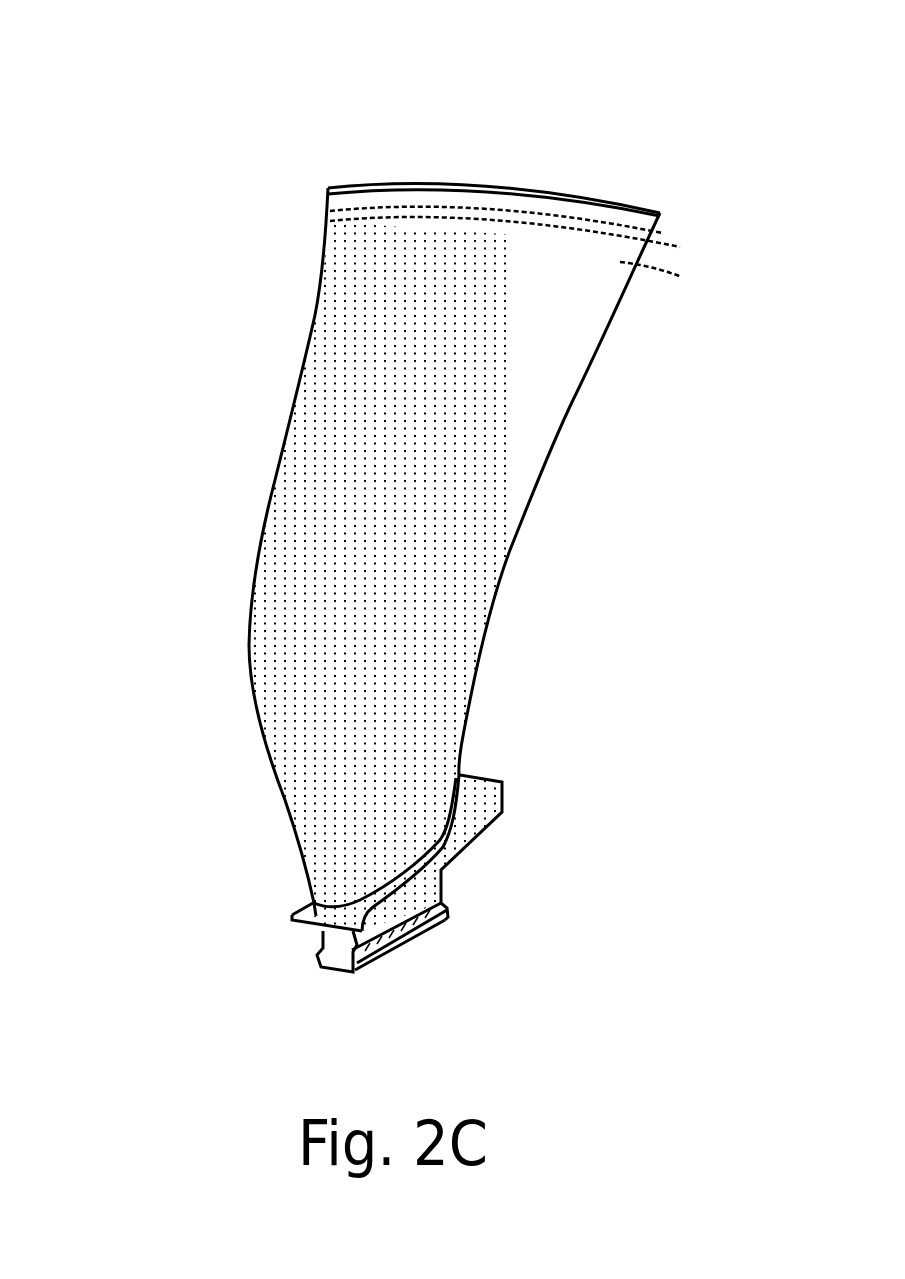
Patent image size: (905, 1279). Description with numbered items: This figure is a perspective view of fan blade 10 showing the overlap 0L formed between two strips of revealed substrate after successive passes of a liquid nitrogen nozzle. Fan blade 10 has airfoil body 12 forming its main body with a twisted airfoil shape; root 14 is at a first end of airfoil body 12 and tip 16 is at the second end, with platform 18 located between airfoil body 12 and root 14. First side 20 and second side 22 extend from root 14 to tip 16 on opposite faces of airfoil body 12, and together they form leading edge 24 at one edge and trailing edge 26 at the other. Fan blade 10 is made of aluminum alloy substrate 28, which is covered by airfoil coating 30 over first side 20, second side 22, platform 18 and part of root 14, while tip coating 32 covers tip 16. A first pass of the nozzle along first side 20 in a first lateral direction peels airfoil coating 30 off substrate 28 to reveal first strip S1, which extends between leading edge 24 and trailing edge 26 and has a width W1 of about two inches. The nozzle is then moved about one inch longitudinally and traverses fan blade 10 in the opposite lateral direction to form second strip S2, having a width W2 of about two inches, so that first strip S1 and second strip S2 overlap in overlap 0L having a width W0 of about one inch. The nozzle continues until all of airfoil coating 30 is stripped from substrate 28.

The fan blade 10 is at (110, 98).
The airfoil body 12 is at (578, 493).
The root 14 is at (340, 955).
The tip 16 is at (466, 190).
The platform 18 is at (306, 915).
The first side 20 is at (295, 567).
The second side 22 is at (505, 566).
The leading edge 24 is at (256, 693).
The trailing edge 26 is at (488, 637).
The substrate 28 is at (573, 216).
The airfoil coating 30 is at (515, 372).
The tip coating 32 is at (665, 213).
The first strip S1 is at (660, 240).
The second strip S2 is at (684, 247).
The overlap width W0 is at (362, 216).
The first strip width W1 is at (400, 191).
The second strip width W2 is at (477, 233).
The overlap 0L is at (326, 209).